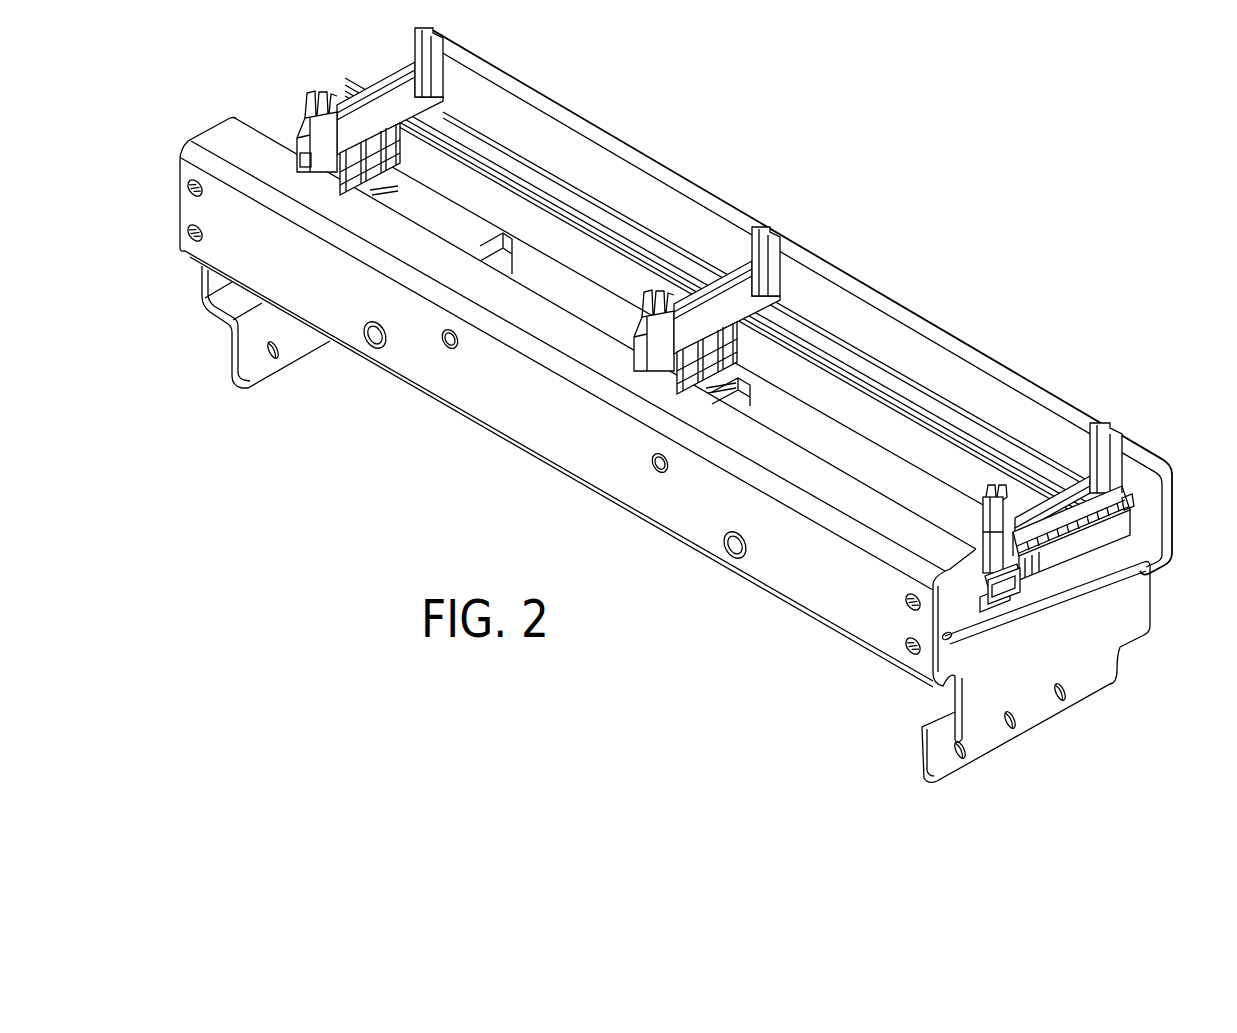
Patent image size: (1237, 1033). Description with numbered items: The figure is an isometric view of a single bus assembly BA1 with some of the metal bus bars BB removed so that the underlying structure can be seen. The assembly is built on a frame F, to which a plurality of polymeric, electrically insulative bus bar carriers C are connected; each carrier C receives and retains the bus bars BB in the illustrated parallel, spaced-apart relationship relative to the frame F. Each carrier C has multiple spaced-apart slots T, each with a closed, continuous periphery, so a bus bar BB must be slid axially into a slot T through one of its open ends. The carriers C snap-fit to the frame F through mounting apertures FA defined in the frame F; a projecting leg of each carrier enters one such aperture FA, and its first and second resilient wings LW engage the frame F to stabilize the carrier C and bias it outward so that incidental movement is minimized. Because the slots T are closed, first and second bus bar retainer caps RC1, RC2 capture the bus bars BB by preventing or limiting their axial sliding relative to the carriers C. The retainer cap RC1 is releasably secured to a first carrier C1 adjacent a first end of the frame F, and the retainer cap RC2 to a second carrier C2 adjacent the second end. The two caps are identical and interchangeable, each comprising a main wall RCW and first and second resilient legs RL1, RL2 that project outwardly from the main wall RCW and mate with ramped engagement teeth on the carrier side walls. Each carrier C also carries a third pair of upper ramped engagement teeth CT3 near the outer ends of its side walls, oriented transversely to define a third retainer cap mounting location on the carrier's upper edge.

The bus assembly BA1 is at (705, 168).
The frame F is at (900, 300).
The bus bars BB is at (893, 425).
The bus bar carrier C is at (447, 92).
The first carrier C1 is at (1125, 472).
The second carrier C2 is at (450, 75).
The first bus bar retainer cap RC1 is at (1108, 550).
The second bus bar retainer cap RC2 is at (298, 122).
The main wall RCW is at (310, 122).
The first resilient leg RL1 is at (988, 576).
The second resilient leg RL2 is at (298, 155).
The slots T is at (352, 180).
The resilient wings LW is at (400, 188).
The mounting apertures FA is at (380, 194).
The upper ramped engagement teeth CT3 is at (995, 500).